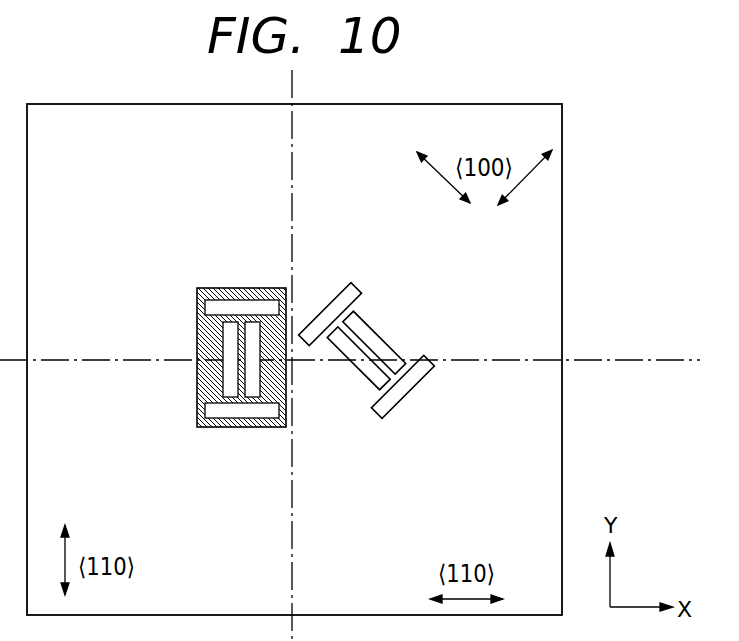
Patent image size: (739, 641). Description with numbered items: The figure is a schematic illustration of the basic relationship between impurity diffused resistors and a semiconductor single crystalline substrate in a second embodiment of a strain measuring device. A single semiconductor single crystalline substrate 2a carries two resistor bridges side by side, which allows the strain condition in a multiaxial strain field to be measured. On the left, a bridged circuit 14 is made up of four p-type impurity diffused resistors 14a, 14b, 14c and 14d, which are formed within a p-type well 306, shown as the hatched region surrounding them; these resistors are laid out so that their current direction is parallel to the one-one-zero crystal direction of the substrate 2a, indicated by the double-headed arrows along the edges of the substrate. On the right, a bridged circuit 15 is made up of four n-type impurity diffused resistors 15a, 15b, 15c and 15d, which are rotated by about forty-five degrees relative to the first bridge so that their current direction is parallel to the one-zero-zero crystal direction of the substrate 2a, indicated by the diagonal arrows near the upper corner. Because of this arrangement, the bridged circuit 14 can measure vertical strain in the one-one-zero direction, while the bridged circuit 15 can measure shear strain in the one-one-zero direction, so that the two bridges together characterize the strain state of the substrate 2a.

The substrate 2a is at (508, 121).
The bridged circuit 14 is at (189, 369).
The p-type impurity diffused resistor 14a is at (219, 307).
The p-type impurity diffused resistor 14b is at (253, 328).
The p-type impurity diffused resistor 14c is at (253, 413).
The p-type impurity diffused resistor 14d is at (232, 390).
The bridged circuit 15 is at (398, 347).
The n-type impurity diffused resistor 15a is at (330, 314).
The n-type impurity diffused resistor 15b is at (338, 298).
The n-type impurity diffused resistor 15c is at (402, 386).
The n-type impurity diffused resistor 15d is at (358, 358).
The p-type well 306 is at (198, 387).